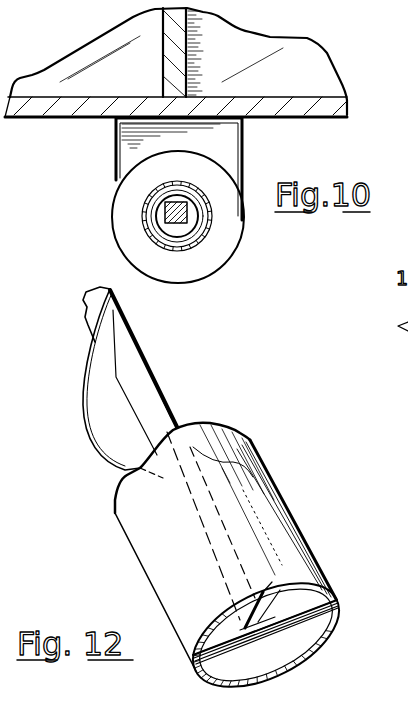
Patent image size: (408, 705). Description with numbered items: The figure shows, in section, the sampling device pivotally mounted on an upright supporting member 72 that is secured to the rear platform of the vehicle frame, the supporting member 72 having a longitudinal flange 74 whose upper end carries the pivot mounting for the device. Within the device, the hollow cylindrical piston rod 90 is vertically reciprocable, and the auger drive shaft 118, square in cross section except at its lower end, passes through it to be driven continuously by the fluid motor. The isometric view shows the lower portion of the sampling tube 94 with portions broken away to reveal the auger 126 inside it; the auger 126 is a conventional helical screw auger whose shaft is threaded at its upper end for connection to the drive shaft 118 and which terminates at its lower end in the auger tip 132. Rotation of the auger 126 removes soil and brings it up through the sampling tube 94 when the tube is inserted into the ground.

In FIG. 10, the upright supporting member 72 is at (241, 46).
In FIG. 10, the longitudinal flange 74 is at (282, 117).
In FIG. 10, the hollow cylindrical piston rod 90 is at (193, 231).
In FIG. 10, the auger drive shaft 118 is at (180, 200).
In FIG. 12, the auger 126 is at (160, 378).
In FIG. 12, the sampling tube 94 is at (300, 538).
In FIG. 12, the auger tip 132 is at (305, 632).